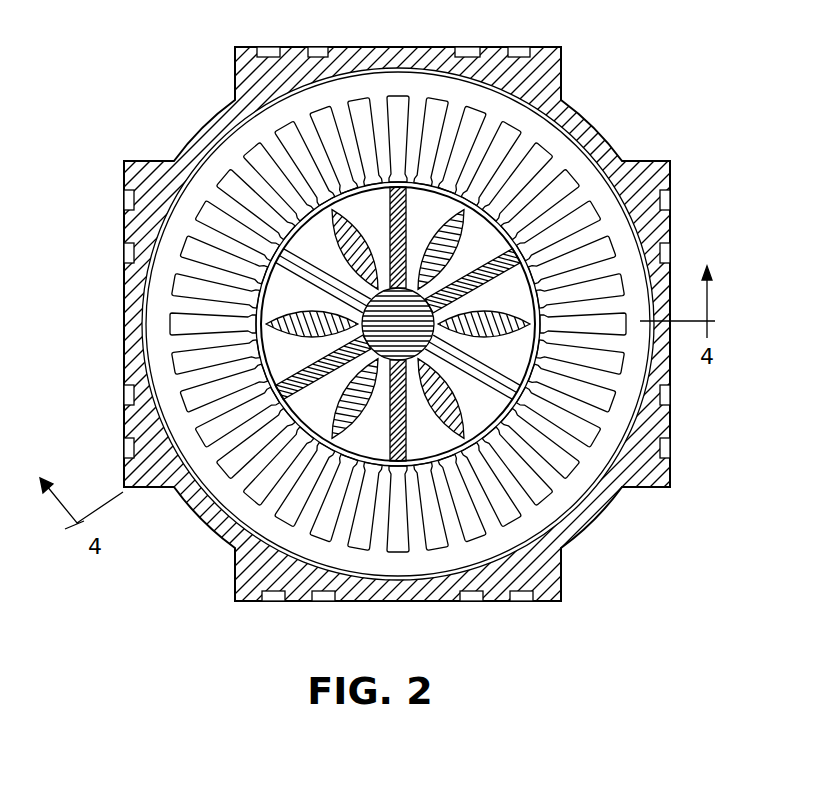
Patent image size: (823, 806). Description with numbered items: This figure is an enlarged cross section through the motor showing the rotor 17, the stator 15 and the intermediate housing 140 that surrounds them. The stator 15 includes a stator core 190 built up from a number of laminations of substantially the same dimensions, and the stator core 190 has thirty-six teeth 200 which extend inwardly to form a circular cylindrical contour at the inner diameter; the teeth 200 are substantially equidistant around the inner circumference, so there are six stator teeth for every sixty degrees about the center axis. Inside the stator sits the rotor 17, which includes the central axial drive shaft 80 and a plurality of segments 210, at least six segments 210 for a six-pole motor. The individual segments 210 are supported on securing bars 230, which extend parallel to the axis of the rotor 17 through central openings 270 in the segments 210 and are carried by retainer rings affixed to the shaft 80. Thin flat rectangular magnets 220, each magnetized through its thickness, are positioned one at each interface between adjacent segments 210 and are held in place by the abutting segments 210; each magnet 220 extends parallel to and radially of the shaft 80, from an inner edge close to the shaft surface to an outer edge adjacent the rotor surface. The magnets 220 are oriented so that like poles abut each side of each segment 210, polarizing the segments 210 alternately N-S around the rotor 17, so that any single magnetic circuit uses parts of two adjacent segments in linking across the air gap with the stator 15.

The stator 15 is at (563, 146).
The rotor 17 is at (352, 447).
The central axial drive shaft 80 is at (393, 308).
The intermediate housing 140 is at (438, 48).
The stator core 190 is at (583, 166).
The teeth 200 is at (582, 404).
The segments 210 is at (188, 318).
The magnets 220 is at (284, 263).
The securing bars 230 is at (268, 324).
The central openings 270 is at (278, 250).